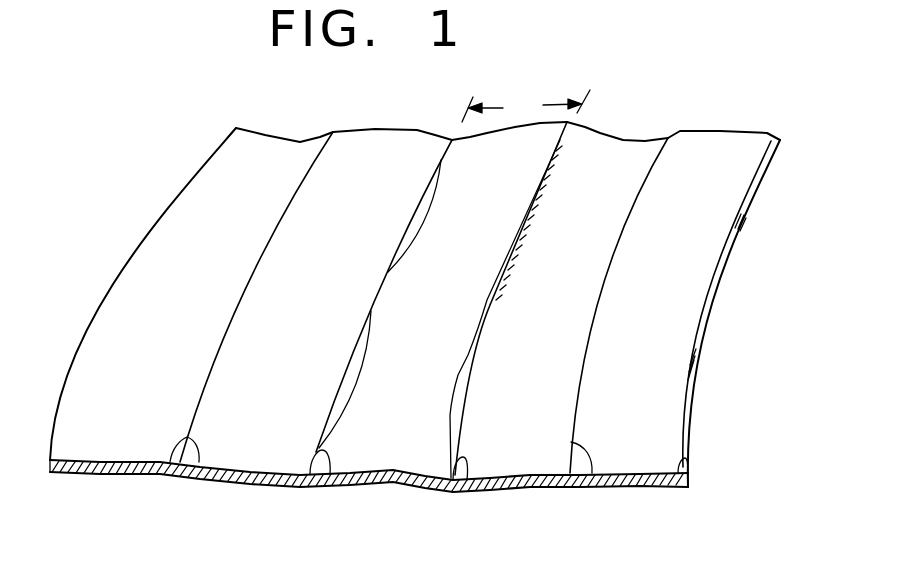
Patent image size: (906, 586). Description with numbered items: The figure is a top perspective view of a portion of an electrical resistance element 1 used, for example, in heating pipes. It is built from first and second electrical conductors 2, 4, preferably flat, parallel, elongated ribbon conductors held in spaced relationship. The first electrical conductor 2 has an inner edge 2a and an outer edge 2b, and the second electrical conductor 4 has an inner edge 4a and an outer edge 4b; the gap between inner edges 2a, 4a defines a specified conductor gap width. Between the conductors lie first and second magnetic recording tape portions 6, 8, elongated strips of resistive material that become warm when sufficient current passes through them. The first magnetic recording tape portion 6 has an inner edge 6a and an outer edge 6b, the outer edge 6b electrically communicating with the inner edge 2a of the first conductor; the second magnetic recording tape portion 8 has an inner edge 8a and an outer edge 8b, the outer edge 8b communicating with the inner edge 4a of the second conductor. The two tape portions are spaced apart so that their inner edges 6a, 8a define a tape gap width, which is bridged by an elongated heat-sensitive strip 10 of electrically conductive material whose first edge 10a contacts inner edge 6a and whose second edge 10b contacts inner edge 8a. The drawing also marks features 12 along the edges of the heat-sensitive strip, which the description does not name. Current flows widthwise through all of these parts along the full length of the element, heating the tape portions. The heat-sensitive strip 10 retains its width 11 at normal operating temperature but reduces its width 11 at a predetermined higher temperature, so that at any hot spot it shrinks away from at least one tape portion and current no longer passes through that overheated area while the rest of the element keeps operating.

The electrical resistance element 1 is at (719, 330).
The first electrical conductor 2 is at (85, 447).
The inner edge of first electrical conductor 2a is at (167, 462).
The outer edge of first electrical conductor 2b is at (78, 357).
The second electrical conductor 4 is at (720, 147).
The inner edge of second electrical conductor 4a is at (593, 480).
The outer edge of second electrical conductor 4b is at (673, 487).
The first magnetic recording tape portion 6 is at (388, 143).
The inner edge of first magnetic recording tape portion 6a is at (303, 487).
The outer edge of first magnetic recording tape portion 6b is at (197, 440).
The second magnetic recording tape portion 8 is at (630, 153).
The inner edge of second magnetic recording tape portion 8a is at (460, 467).
The outer edge of second magnetic recording tape portion 8b is at (567, 460).
The heat-sensitive strip 10 is at (397, 460).
The first edge of heat-sensitive strip 10a is at (327, 467).
The second edge of heat-sensitive strip 10b is at (453, 477).
The width of heat-sensitive strip 11 is at (526, 106).
The slots 12 is at (520, 197).